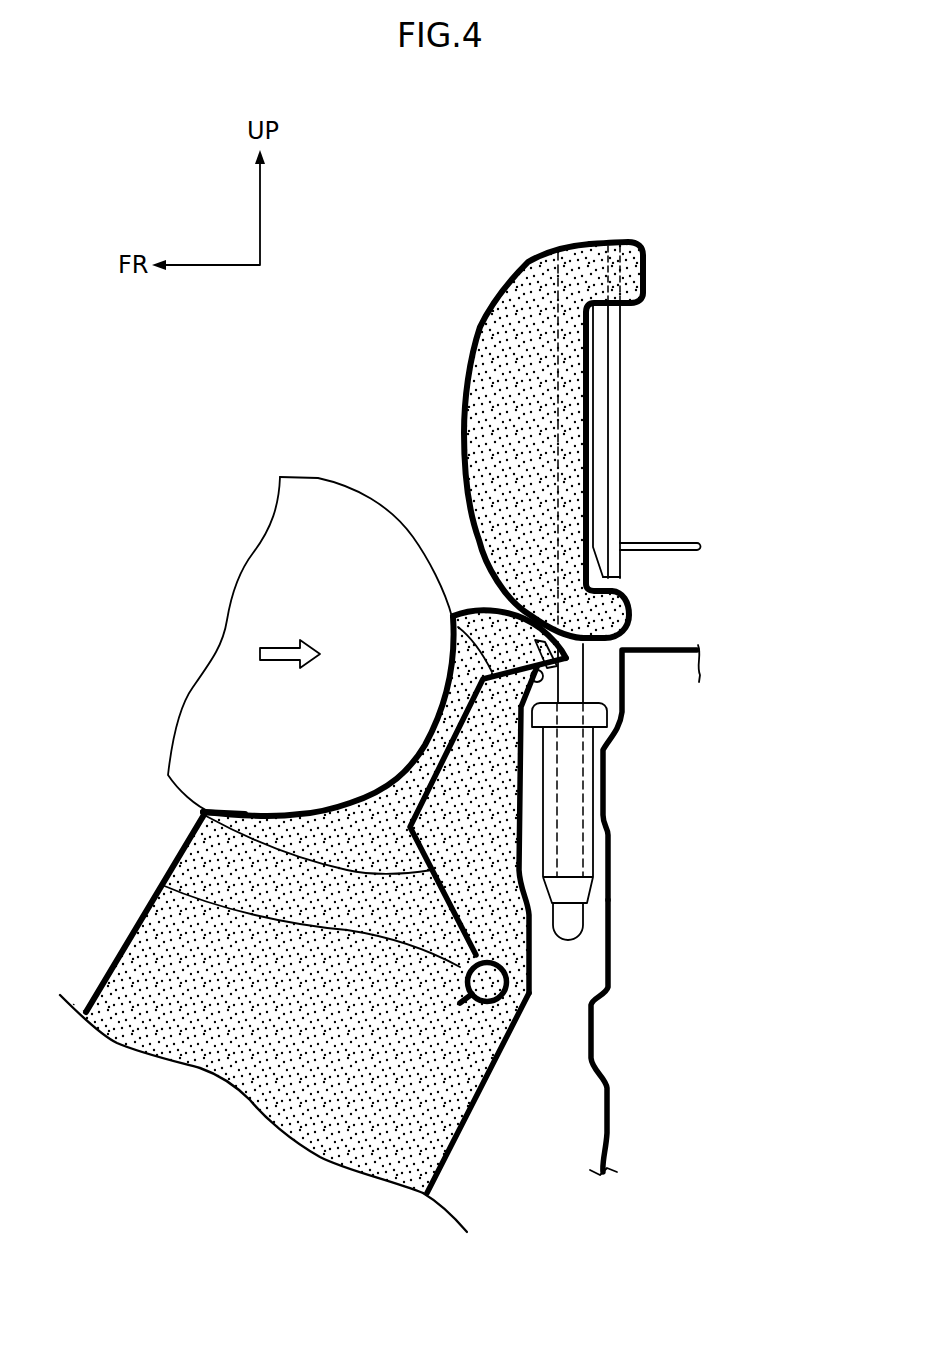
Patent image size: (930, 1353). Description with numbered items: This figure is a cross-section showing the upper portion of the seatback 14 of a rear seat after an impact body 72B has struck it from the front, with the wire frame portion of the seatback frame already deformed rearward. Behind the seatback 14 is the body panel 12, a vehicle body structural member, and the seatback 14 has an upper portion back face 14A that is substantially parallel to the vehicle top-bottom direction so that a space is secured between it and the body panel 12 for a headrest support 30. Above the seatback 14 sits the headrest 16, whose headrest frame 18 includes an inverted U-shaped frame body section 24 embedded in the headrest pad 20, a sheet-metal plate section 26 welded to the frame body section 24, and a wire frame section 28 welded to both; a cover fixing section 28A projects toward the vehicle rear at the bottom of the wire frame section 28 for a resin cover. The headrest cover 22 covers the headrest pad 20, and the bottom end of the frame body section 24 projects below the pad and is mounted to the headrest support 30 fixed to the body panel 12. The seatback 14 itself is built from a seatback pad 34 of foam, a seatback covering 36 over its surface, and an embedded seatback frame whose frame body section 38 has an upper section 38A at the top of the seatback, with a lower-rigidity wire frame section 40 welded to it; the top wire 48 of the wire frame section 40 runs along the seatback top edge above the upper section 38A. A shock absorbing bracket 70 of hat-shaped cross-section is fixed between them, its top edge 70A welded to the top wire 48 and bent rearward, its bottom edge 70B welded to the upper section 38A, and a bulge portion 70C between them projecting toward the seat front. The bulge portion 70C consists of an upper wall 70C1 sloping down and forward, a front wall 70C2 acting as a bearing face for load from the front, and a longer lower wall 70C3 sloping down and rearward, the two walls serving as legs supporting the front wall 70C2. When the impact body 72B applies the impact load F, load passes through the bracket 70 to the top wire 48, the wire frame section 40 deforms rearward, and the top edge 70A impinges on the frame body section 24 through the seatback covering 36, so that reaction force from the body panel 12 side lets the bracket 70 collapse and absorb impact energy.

The body panel 12 is at (616, 958).
The seatback 14 is at (467, 1137).
The upper portion back face 14A is at (522, 806).
The headrest 16 is at (528, 260).
The headrest frame 18 is at (627, 404).
The headrest pad 20 is at (506, 334).
The headrest cover 22 is at (463, 392).
The frame body section 24 is at (622, 700).
The plate section 26 is at (595, 360).
The wire frame section 28 is at (621, 462).
The cover fixing section 28A is at (688, 543).
The headrest support 30 is at (588, 860).
The seatback pad 34 is at (170, 967).
The seatback covering 36 is at (97, 990).
The frame body section 38 is at (466, 998).
The upper section 38A is at (493, 1006).
The wire frame section 40 is at (570, 790).
The top wire 48 is at (588, 690).
The shock absorbing bracket 70 is at (405, 806).
The top edge 70A is at (467, 608).
The bottom edge 70B is at (164, 880).
The bulge portion 70C is at (437, 743).
The upper wall 70C1 is at (535, 650).
The front wall 70C2 is at (531, 677).
The lower wall 70C3 is at (203, 812).
The impact body 72B is at (320, 477).
The impact load F is at (268, 645).